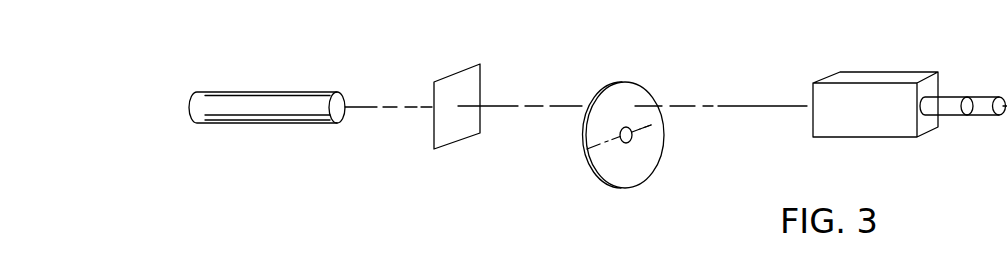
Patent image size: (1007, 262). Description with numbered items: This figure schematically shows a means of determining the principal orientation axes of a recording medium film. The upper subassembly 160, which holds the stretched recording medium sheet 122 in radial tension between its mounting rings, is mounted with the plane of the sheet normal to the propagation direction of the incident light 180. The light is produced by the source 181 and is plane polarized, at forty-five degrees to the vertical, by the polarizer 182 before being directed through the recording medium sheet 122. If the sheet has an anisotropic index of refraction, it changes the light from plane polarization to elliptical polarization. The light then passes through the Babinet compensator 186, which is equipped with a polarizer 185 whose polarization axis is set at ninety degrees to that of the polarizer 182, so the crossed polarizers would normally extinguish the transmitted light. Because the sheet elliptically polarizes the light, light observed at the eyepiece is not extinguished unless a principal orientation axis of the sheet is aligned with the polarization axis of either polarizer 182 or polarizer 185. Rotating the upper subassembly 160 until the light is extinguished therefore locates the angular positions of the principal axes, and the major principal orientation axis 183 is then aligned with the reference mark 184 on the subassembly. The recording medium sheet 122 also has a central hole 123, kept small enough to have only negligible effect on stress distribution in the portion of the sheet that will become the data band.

The recording medium sheet 122 is at (635, 170).
The central hole 123 is at (631, 130).
The upper subassembly 160 is at (587, 168).
The incident light 180 is at (416, 107).
The source 181 is at (293, 108).
The polarizer 182 is at (458, 128).
The major principal orientation axis 183 is at (648, 125).
The reference mark 184 is at (584, 146).
The polarizer 185 is at (970, 108).
The Babinet compensator 186 is at (867, 122).